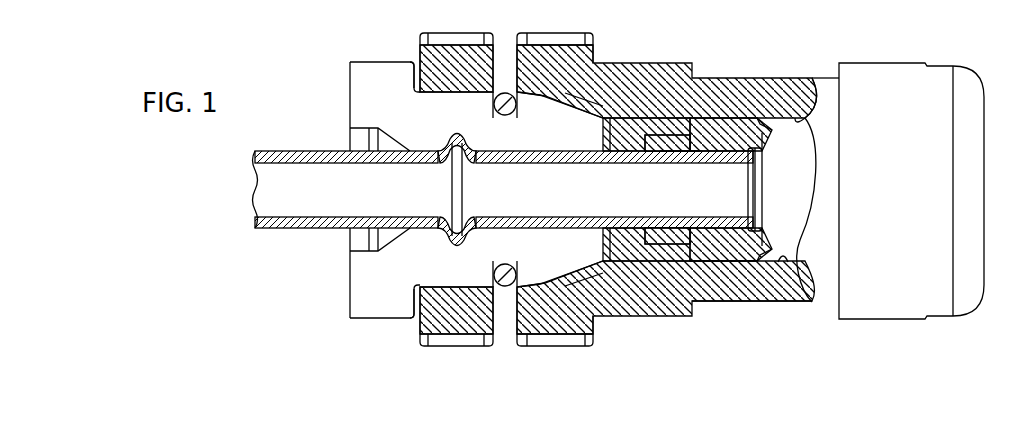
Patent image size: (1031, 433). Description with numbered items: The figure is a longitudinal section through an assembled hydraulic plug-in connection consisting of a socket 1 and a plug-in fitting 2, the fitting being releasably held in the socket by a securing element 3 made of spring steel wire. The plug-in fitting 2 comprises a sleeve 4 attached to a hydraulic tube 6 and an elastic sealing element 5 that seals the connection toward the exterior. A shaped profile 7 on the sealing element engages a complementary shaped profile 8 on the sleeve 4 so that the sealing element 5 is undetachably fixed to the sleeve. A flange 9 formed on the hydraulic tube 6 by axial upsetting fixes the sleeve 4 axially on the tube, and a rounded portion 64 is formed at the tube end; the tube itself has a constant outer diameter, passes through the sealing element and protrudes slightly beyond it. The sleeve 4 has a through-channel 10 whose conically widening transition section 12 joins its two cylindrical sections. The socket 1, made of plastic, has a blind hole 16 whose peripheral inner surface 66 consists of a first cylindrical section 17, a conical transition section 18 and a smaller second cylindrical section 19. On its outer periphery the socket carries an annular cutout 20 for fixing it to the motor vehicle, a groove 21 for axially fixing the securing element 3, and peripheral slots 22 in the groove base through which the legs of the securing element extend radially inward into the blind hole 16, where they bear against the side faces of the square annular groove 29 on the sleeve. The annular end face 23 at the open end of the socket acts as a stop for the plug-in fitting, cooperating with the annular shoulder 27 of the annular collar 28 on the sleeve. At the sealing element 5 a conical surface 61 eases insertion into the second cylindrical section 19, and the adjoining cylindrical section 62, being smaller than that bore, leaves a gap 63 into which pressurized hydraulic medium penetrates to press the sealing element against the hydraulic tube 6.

The socket 1 is at (893, 58).
The plug-in fitting 2 is at (340, 86).
The securing element 3 is at (506, 92).
The sleeve 4 is at (633, 118).
The sealing element 5 is at (772, 128).
The hydraulic tube 6 is at (279, 226).
The shaped profile 7 is at (656, 130).
The complementary shaped profile 8 is at (675, 154).
The flange 9 is at (470, 128).
The through-channel 10 is at (344, 134).
The transition section 12 is at (378, 242).
The blind hole 16 is at (786, 240).
The first cylindrical section 17 is at (541, 95).
The conical transition section 18 is at (603, 113).
The second cylindrical section 19 is at (798, 118).
The annular cutout 20 is at (718, 78).
The groove 21 is at (497, 50).
The peripheral slots 22 is at (495, 103).
The annular end face 23 is at (421, 58).
The annular shoulder 27 is at (413, 78).
The annular collar 28 is at (367, 318).
The annular groove 29 is at (495, 273).
The conical surface 61 is at (751, 127).
The cylindrical section 62 is at (737, 127).
The gap 63 is at (730, 262).
The rounded portion 64 is at (763, 158).
The peripheral inner surface 66 is at (783, 262).